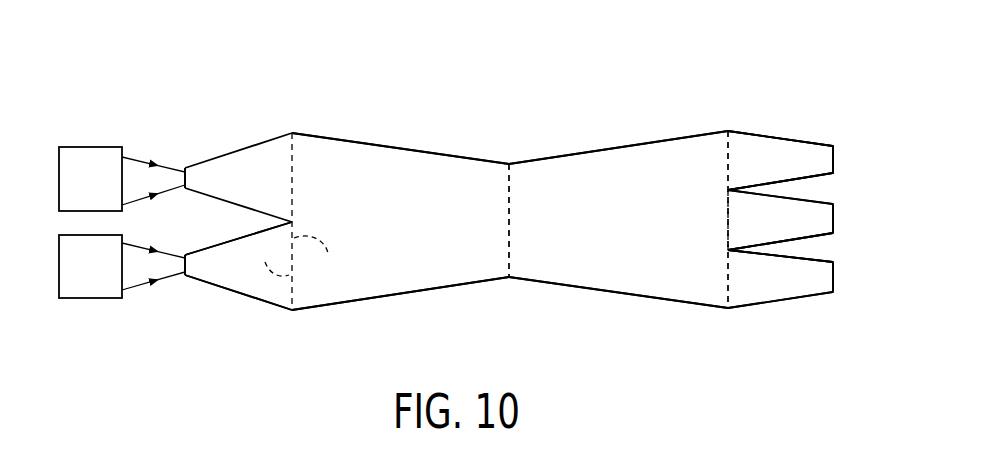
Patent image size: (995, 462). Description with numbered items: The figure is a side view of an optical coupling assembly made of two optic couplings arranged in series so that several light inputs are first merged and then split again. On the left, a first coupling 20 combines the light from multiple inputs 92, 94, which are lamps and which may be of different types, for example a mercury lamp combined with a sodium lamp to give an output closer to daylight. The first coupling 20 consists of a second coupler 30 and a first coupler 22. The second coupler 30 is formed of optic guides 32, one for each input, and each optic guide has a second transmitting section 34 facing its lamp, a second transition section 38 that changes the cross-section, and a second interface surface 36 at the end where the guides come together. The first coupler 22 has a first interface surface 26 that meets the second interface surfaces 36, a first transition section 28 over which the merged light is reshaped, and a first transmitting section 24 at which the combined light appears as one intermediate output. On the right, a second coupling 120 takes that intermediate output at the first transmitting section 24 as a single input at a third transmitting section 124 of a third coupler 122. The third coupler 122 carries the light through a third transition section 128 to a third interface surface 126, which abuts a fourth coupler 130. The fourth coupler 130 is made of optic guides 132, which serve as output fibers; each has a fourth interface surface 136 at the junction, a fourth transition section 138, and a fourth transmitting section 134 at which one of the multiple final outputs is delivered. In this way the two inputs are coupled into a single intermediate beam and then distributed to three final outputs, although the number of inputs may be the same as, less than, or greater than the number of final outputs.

The first coupling 20 is at (365, 103).
The first coupler 22 is at (436, 257).
The first transmitting section 24 is at (510, 213).
The first interface surface 26 is at (273, 256).
The first transition section 28 is at (420, 150).
The second coupler 30 is at (266, 130).
The optic guides 32 is at (222, 268).
The second transmitting section 34 is at (183, 172).
The second interface surface 36 is at (314, 262).
The second transition section 38 is at (248, 298).
The input 92 is at (88, 280).
The input 94 is at (88, 167).
The second coupling 120 is at (790, 82).
The third coupler 122 is at (608, 297).
The third transmitting section 124 is at (509, 222).
The third interface surface 126 is at (728, 180).
The third transition section 128 is at (598, 148).
The fourth coupler 130 is at (813, 135).
The optic guides 132 is at (758, 132).
The fourth transmitting section 134 is at (833, 155).
The fourth interface surface 136 is at (728, 180).
The fourth transition section 138 is at (833, 174).